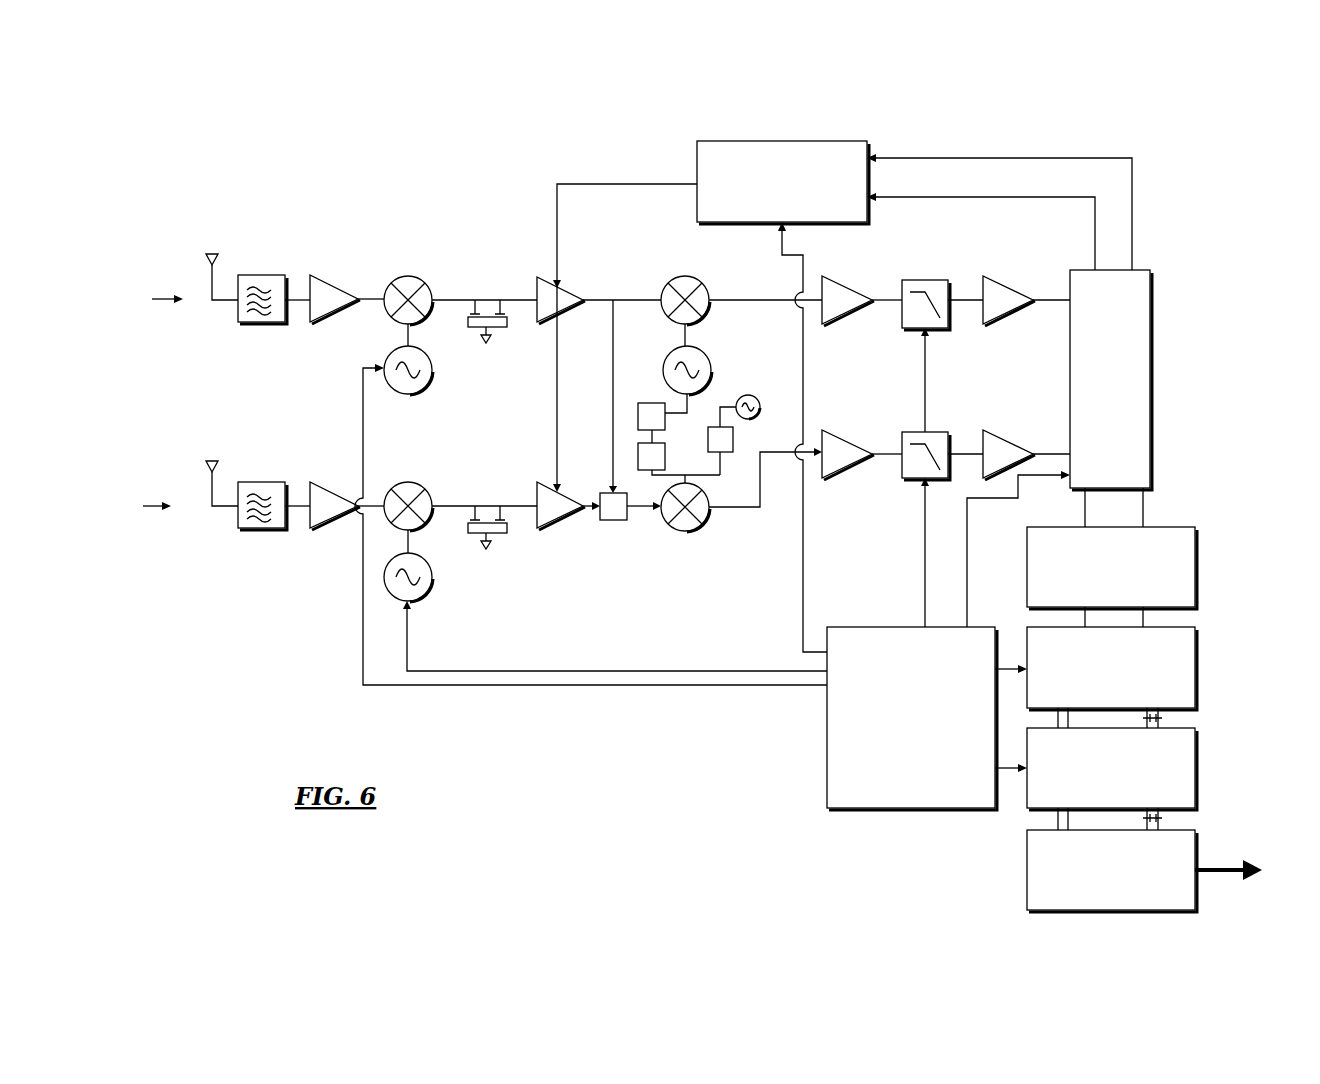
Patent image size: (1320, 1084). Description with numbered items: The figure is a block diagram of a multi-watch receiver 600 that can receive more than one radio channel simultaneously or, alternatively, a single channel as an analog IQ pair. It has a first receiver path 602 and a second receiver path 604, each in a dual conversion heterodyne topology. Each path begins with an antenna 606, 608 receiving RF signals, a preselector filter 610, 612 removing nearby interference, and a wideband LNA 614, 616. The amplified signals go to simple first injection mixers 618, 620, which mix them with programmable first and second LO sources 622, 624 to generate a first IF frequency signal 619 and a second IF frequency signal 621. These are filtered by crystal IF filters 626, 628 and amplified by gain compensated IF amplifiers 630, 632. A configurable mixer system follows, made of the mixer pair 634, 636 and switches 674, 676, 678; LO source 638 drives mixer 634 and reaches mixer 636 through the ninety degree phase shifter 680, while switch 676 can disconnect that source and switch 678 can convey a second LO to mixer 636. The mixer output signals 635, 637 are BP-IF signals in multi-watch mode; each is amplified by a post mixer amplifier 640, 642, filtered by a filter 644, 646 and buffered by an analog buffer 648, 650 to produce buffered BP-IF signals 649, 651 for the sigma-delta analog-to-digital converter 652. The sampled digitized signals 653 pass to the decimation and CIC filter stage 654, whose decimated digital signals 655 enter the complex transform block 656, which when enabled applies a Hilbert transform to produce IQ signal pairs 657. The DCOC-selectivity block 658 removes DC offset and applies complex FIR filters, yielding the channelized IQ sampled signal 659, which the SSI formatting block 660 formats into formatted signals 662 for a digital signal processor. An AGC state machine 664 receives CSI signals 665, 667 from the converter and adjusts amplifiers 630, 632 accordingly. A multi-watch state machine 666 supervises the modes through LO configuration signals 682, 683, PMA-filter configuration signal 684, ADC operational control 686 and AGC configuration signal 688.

The multi-watch receiver 600 is at (686, 501).
The first receiver path 602 is at (150, 298).
The second receiver path 604 is at (140, 499).
The antenna 606 is at (210, 253).
The antenna 608 is at (208, 460).
The preselector filter 610 is at (247, 275).
The preselector filter 612 is at (247, 482).
The LNA 614 is at (317, 278).
The LNA 616 is at (328, 530).
The first injection mixer 618 is at (405, 276).
The first IF frequency signal 619 is at (445, 300).
The first injection mixer 620 is at (428, 492).
The second IF frequency signal 621 is at (450, 506).
The first local oscillator source 622 is at (432, 374).
The second local oscillator source 624 is at (428, 590).
The IF filter 626 is at (494, 331).
The IF filter 628 is at (496, 538).
The IF amplifier 630 is at (537, 277).
The IF amplifier 632 is at (550, 527).
The mixer 634 is at (676, 282).
The mixer output signal 635 is at (708, 306).
The mixer 636 is at (670, 529).
The mixer output signal 637 is at (748, 509).
The LO source 638 is at (665, 365).
The post mixer amplifier 640 is at (836, 285).
The post mixer amplifier 642 is at (840, 442).
The filter 644 is at (930, 281).
The filter 646 is at (916, 480).
The analog buffer 648 is at (1001, 281).
The buffered BP-IF signal 649 is at (1043, 300).
The analog buffer 650 is at (998, 432).
The buffered BP-IF signal 651 is at (1042, 454).
The analog-to-digital converter 652 is at (1152, 292).
The sampled digitized signals 653 is at (1143, 513).
The decimation and CIC filter stage 654 is at (1195, 567).
The decimated digital signals 655 is at (1145, 618).
The complex transform block 656 is at (1195, 675).
The IQ signal pair 657 is at (1162, 718).
The DCOC-selectivity block 658 is at (1195, 772).
The channelized complex paired IQ sampled signal 659 is at (1162, 818).
The SSI formatting block 660 is at (1027, 888).
The formatted signals 662 is at (1208, 875).
The AGC state machine 664 is at (763, 141).
The CSI signal 665 is at (1077, 158).
The multi-watch state machine 666 is at (887, 808).
The CSI signal 667 is at (1065, 197).
The switch 674 is at (612, 520).
The switch 676 is at (656, 403).
The switch 678 is at (708, 432).
The 90 degree phase shifter 680 is at (638, 458).
The LO configuration signal 682 is at (733, 671).
The LO configuration signal 683 is at (722, 685).
The PMA-filter configuration signal 684 is at (925, 378).
The ADC operational control signal 686 is at (967, 568).
The AGC configuration signal 688 is at (803, 383).